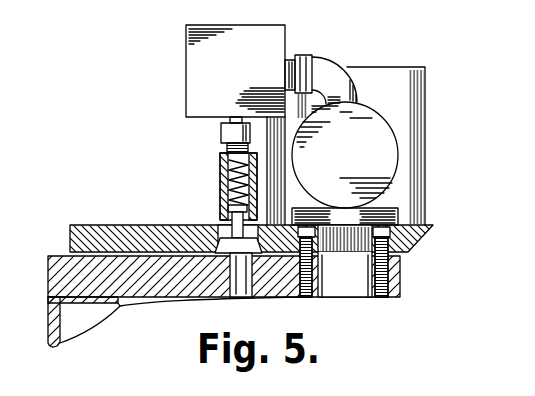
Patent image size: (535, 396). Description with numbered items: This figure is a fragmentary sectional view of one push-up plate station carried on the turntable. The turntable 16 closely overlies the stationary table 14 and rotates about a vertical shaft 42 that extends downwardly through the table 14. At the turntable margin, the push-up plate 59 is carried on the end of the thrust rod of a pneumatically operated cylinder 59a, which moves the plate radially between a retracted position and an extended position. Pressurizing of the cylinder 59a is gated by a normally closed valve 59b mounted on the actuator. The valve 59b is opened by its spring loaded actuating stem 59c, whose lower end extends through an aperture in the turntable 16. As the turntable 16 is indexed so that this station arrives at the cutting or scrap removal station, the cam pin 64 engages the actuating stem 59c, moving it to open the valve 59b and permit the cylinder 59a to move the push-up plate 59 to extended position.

The push-up plate 59 is at (410, 90).
The pneumatically operated cylinder 59a is at (362, 155).
The normally closed valve 59b is at (246, 63).
The actuating stem 59c is at (213, 186).
The turntable 16 is at (132, 228).
The table 14 is at (143, 279).
The vertical shaft 42 is at (356, 280).
The cam pin 64 is at (238, 297).